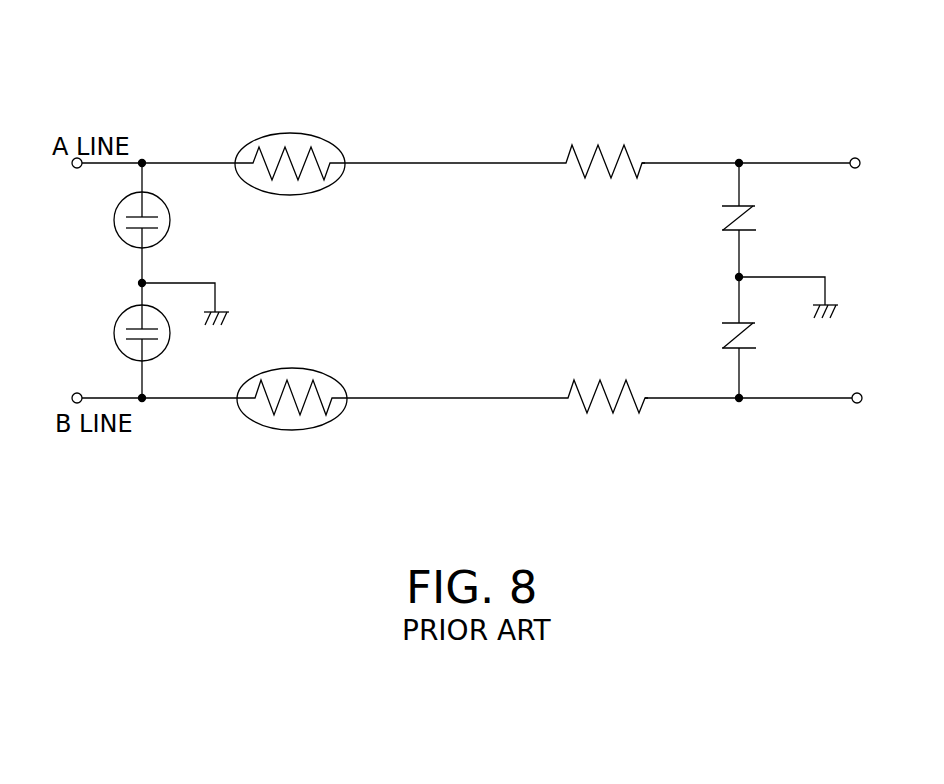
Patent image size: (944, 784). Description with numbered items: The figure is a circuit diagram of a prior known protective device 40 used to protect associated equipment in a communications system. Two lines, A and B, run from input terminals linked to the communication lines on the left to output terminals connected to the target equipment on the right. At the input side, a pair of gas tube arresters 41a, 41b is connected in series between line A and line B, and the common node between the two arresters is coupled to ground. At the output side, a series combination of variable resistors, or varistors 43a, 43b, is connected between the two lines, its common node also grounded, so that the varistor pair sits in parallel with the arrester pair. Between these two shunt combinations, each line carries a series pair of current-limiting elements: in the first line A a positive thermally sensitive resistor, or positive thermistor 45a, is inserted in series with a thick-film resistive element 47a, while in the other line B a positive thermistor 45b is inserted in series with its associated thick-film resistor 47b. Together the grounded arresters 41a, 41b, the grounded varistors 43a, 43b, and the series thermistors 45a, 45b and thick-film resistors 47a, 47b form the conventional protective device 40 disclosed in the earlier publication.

The protective device 40 is at (125, 44).
The gas tube arrester 41a is at (115, 218).
The gas tube arrester 41b is at (115, 332).
The varistor 43a is at (750, 215).
The varistor 43b is at (755, 337).
The positive thermistor 45a is at (278, 195).
The positive thermistor 45b is at (280, 368).
The thick-film resistive element 47a is at (611, 150).
The thick-film resistor 47b is at (602, 410).